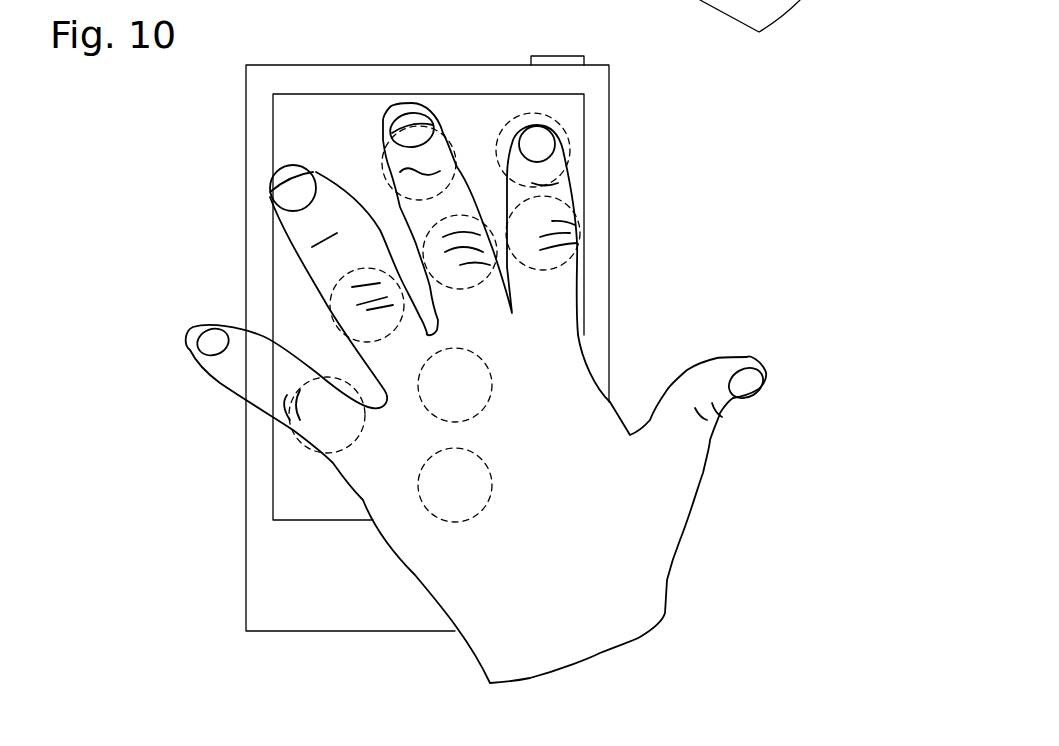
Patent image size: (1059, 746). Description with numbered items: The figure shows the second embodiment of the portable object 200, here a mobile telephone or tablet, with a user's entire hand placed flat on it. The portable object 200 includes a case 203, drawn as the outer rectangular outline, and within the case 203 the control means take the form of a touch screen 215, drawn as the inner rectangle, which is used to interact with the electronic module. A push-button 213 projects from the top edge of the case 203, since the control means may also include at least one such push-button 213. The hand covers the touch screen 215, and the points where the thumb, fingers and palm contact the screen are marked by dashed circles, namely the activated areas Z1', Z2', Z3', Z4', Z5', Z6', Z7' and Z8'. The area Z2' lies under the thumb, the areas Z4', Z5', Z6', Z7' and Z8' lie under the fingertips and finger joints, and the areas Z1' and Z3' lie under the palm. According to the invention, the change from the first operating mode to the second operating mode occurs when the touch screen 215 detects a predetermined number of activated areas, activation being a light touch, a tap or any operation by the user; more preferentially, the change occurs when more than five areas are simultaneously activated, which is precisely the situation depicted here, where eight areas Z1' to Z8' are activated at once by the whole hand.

The portable object 200 is at (743, 104).
The case 203 is at (282, 631).
The push-button 213 is at (557, 60).
The touch screen 215 is at (284, 473).
The activated area Z1' is at (455, 485).
The activated area Z2' is at (266, 365).
The activated area Z3' is at (455, 385).
The activated area Z4' is at (286, 282).
The activated area Z5' is at (332, 217).
The activated area Z6' is at (388, 104).
The activated area Z7' is at (593, 233).
The activated area Z8' is at (495, 98).